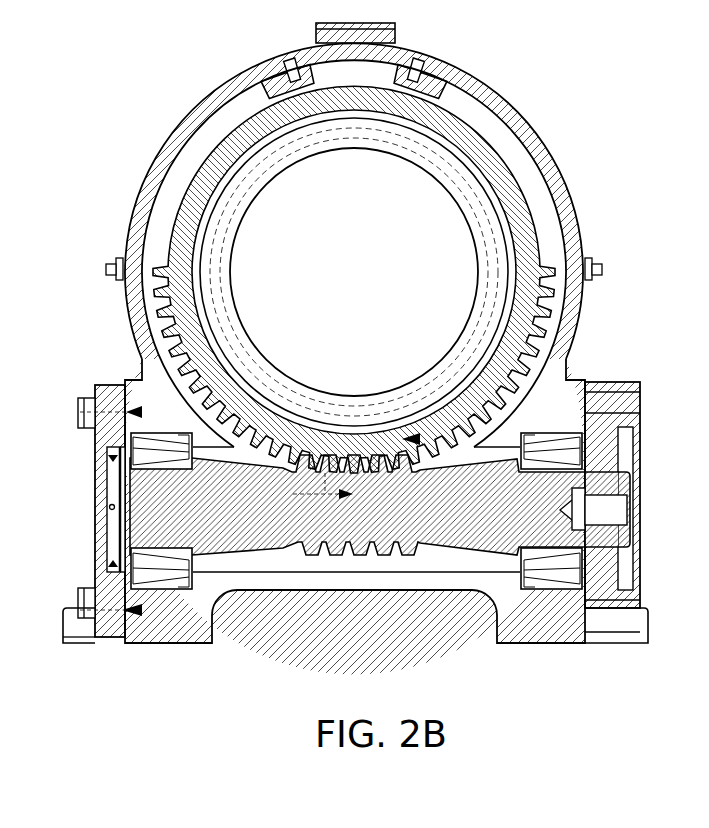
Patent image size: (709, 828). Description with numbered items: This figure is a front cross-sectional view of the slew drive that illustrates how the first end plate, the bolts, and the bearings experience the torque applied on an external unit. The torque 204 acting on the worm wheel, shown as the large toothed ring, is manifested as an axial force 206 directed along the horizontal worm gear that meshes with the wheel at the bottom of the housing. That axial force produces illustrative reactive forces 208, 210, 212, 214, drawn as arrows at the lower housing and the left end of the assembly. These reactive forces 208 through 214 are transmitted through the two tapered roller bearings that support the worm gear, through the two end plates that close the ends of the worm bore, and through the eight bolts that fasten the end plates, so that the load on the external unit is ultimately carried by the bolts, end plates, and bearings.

The torque 204 is at (540, 248).
The axial force 206 is at (325, 472).
The reactive force 208 is at (173, 637).
The reactive force 210 is at (115, 633).
The reactive force 212 is at (118, 400).
The reactive force 214 is at (95, 430).